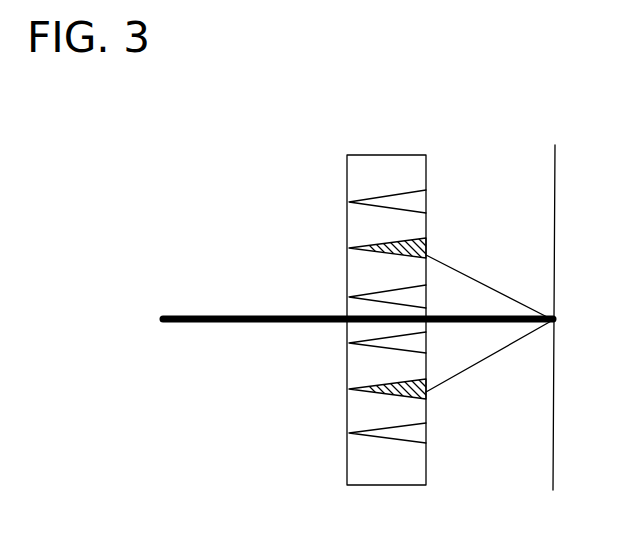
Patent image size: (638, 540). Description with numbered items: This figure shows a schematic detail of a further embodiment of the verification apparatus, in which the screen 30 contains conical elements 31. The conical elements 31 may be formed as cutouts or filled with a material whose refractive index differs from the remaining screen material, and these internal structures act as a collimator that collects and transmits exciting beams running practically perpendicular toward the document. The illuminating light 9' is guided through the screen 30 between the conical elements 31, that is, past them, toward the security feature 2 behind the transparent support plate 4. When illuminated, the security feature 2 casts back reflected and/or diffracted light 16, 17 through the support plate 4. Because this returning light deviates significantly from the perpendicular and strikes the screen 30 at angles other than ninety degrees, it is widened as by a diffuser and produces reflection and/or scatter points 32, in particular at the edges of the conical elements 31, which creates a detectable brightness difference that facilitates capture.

The screen 30 is at (382, 486).
The conical elements 31 is at (427, 198).
The reflection and/or scatter points 32 is at (378, 249).
The reflected light 9' is at (358, 353).
The diffracted and/or reflected light 16 is at (512, 298).
The diffracted and/or reflected light 17 is at (500, 353).
The security feature 2 is at (555, 320).
The support plate 4 is at (554, 455).